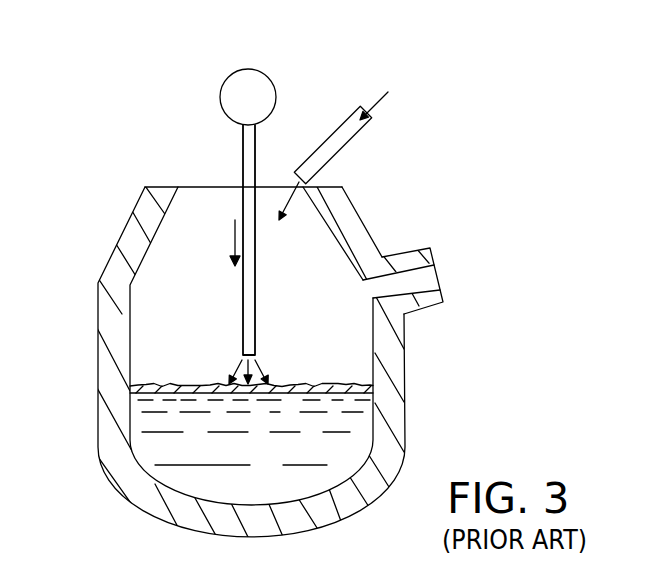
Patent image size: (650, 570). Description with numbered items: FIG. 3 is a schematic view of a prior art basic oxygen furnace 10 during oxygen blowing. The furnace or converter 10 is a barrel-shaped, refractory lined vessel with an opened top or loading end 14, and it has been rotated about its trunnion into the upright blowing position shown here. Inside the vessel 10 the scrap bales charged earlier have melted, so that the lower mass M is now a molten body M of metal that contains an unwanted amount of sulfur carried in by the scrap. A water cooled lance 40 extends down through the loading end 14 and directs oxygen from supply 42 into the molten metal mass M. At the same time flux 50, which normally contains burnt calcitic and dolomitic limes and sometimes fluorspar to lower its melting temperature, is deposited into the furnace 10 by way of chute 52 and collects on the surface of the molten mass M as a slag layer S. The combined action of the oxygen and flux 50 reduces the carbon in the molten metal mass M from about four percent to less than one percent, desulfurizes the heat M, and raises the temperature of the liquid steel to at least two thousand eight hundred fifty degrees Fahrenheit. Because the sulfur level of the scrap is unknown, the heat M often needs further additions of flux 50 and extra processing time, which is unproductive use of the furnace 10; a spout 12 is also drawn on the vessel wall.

The basic oxygen furnace 10 is at (406, 401).
The pouring spout 12 is at (436, 278).
The opened top or loading end 14 is at (196, 196).
The water cooled lance 40 is at (243, 153).
The oxygen supply 42 is at (260, 70).
The flux 50 is at (275, 213).
The chute 52 is at (339, 129).
The slag layer S is at (175, 383).
The molten metal mass M is at (150, 417).